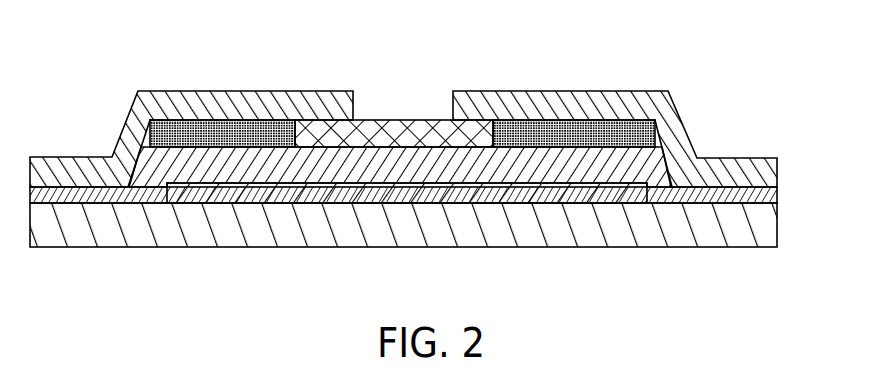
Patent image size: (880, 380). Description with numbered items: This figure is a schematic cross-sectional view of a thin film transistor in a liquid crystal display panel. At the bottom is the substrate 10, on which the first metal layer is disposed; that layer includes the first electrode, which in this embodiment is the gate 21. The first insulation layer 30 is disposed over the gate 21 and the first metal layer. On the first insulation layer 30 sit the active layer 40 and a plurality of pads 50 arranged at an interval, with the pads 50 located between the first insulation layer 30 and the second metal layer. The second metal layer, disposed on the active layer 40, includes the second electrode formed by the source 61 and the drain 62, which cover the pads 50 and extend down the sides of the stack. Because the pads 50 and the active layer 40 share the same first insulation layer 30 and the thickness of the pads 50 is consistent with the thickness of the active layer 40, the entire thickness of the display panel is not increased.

The substrate 10 is at (765, 228).
The gate 21 is at (396, 203).
The first insulation layer 30 is at (778, 192).
The active layer 40 is at (418, 120).
The pads 50 is at (260, 124).
The source 61 is at (204, 100).
The drain 62 is at (650, 100).